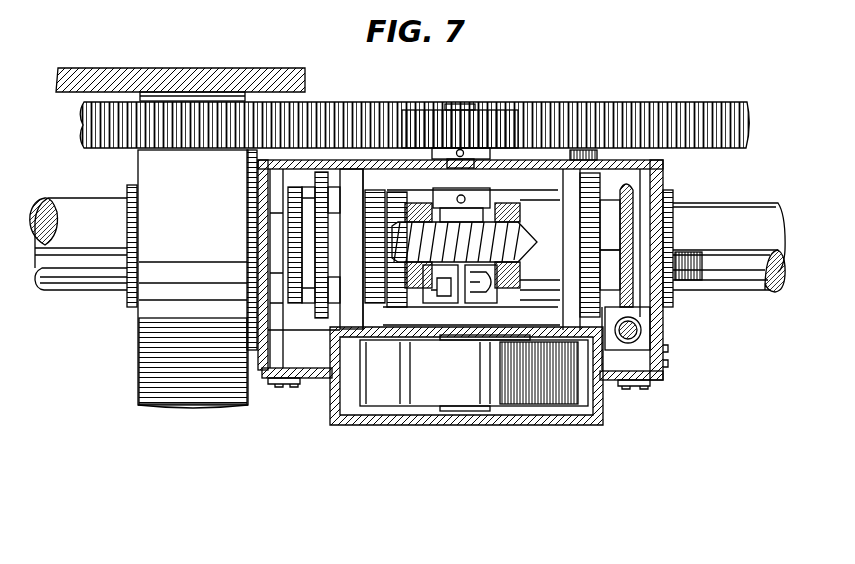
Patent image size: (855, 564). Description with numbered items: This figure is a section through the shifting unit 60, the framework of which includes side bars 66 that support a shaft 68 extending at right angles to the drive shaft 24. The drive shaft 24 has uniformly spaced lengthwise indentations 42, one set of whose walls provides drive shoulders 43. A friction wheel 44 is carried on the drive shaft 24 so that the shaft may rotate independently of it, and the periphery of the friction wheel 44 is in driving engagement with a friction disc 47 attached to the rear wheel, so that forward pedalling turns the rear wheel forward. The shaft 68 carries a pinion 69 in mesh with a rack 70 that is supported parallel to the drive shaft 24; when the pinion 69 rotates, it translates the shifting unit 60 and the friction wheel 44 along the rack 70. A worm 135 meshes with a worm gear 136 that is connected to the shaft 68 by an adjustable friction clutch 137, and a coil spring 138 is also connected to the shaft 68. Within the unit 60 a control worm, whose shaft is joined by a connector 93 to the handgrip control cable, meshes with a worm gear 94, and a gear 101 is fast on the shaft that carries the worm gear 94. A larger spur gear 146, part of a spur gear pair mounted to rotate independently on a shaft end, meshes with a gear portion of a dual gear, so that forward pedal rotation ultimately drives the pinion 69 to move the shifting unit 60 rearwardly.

The friction disc 47 is at (287, 68).
The rack 70 is at (82, 134).
The drive shaft 24 is at (68, 198).
The drive shoulders 43 is at (60, 270).
The friction wheel 44 is at (134, 371).
The shaft 68 is at (459, 104).
The pinion 69 is at (492, 118).
The worm 135 is at (513, 210).
The worm gear 136 is at (537, 237).
The shifting unit 60 is at (672, 167).
The worm gear 94 is at (630, 217).
The lengthwise indentations 42 is at (755, 258).
The connector 93 is at (642, 330).
The gear 101 is at (601, 370).
The side bar 66 is at (515, 410).
The coil spring 138 is at (503, 404).
The adjustable friction clutch 137 is at (447, 303).
The larger spur gear 146 is at (316, 312).